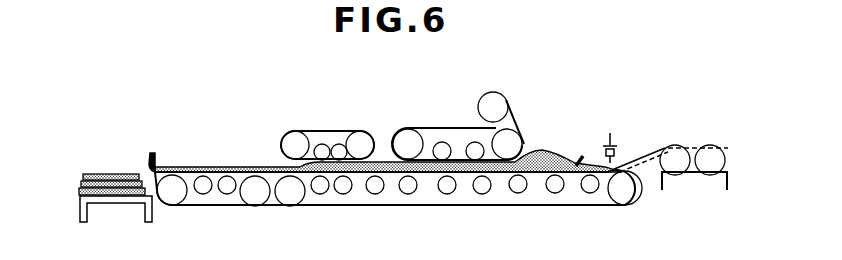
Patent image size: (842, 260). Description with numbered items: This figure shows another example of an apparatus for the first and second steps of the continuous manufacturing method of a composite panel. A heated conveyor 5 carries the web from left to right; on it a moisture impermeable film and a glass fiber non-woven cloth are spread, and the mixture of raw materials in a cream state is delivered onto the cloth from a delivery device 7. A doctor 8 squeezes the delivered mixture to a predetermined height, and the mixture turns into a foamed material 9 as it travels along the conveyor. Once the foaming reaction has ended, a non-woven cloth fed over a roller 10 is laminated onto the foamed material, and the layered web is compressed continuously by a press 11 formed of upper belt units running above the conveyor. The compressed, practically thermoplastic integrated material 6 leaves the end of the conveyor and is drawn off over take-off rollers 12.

The conveyor belt 5 is at (605, 176).
The formed sheet 6 is at (645, 160).
The spray device 7 is at (604, 167).
The scraper blade 8 is at (574, 157).
The material layer 9 is at (528, 152).
The roller 10 is at (520, 108).
The press belt 11 is at (290, 140).
The take-off rollers 12 is at (680, 145).